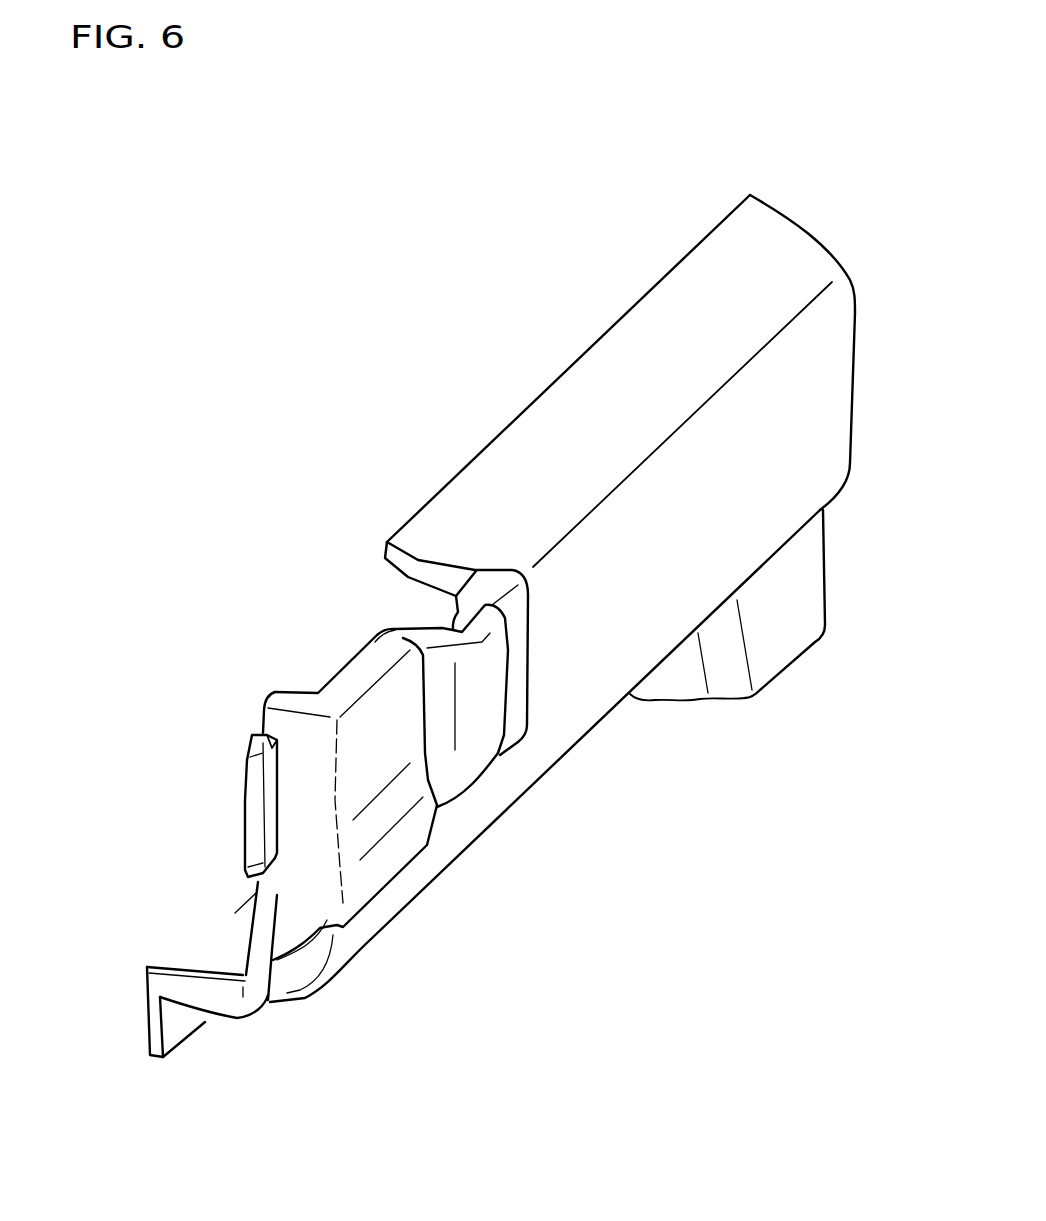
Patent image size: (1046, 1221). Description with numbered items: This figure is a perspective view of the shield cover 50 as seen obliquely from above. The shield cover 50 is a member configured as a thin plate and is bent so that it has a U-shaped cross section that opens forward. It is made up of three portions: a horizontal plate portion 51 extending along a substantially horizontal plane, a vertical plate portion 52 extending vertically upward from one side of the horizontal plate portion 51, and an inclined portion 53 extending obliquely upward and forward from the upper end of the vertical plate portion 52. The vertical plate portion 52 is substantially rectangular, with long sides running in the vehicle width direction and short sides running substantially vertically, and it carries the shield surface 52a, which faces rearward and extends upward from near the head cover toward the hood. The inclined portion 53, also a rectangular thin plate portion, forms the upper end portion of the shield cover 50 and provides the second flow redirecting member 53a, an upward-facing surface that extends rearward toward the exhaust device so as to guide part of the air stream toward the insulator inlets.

The shield cover 50 is at (180, 403).
The horizontal plate portion 51 is at (292, 1002).
The vertical plate portion 52 is at (623, 635).
The shield surface 52a is at (568, 700).
The inclined portion 53 is at (482, 507).
The second flow redirecting member 53a is at (583, 397).